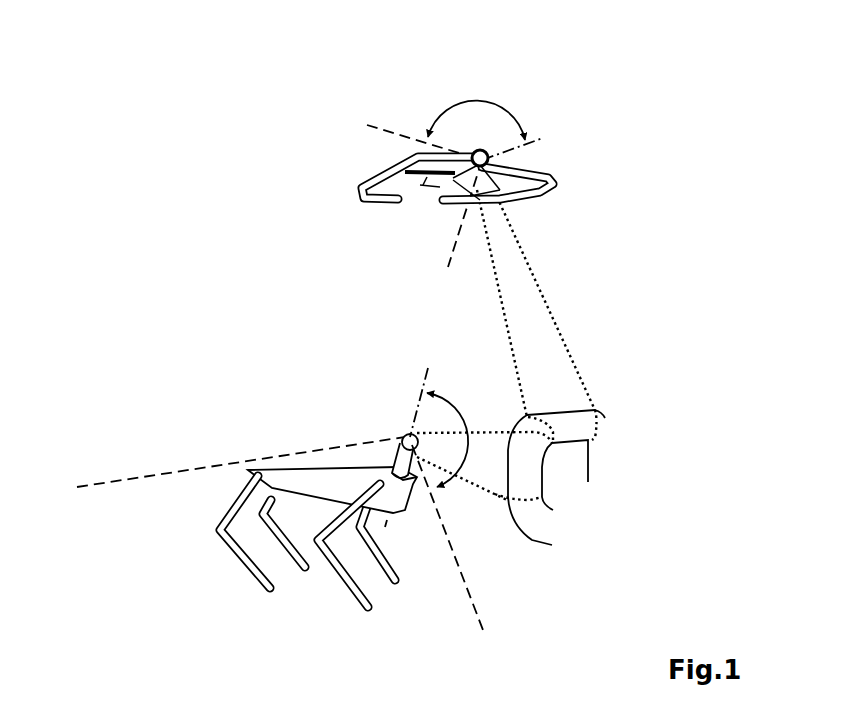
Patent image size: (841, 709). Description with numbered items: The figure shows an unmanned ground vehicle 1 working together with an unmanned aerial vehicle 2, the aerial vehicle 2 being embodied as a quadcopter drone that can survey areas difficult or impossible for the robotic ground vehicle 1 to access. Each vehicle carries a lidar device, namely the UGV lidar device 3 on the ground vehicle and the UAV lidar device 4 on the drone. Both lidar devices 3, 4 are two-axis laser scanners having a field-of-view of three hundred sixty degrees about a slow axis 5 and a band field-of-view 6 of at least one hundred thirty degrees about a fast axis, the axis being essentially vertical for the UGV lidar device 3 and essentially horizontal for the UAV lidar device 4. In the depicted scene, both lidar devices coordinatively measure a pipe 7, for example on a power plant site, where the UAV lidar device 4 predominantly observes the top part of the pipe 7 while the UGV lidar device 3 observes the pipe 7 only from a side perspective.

The unmanned ground vehicle 1 is at (308, 477).
The unmanned aerial vehicle 2 is at (592, 95).
The UGV lidar device 3 is at (400, 440).
The UAV lidar device 4 is at (440, 200).
The slow axis 5 is at (530, 143).
The band field-of-view 6 is at (462, 100).
The pipe 7 is at (607, 418).